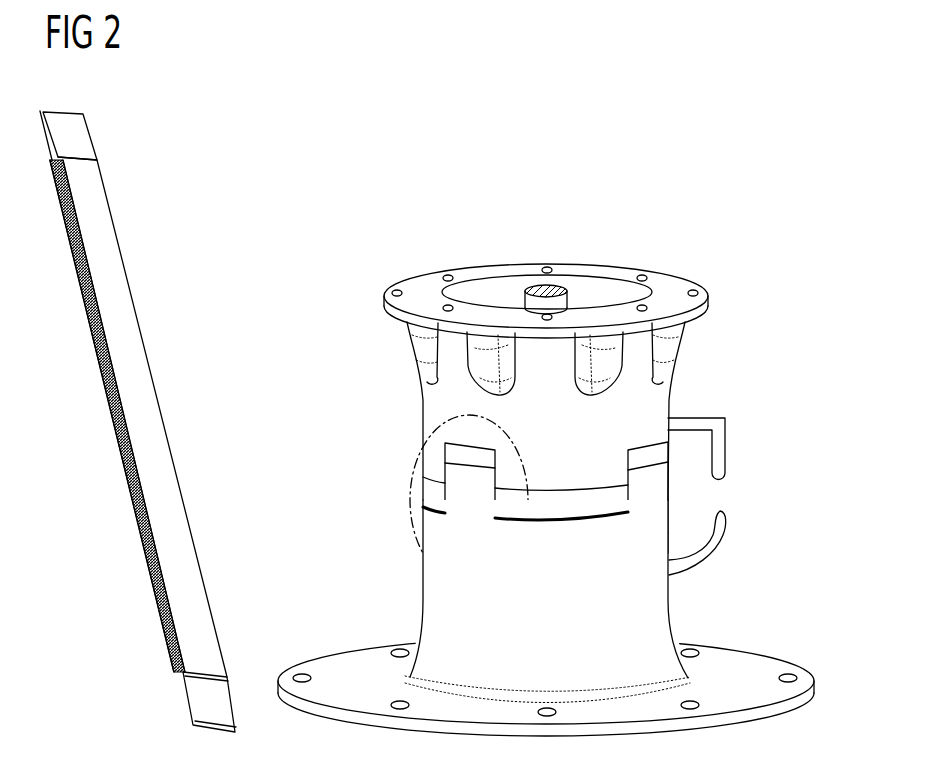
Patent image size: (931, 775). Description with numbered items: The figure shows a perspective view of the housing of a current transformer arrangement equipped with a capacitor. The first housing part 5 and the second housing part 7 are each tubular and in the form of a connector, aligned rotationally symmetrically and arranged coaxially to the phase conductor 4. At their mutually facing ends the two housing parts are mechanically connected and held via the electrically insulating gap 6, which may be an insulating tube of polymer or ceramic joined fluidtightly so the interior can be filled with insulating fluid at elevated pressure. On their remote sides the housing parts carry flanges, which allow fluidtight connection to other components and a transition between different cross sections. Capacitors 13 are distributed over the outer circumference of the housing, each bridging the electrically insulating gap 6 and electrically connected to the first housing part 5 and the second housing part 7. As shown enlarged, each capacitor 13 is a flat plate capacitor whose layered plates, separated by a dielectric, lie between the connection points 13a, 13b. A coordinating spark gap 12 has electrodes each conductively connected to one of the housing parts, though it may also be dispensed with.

The phase conductor 4 is at (538, 290).
The first housing part 5 is at (668, 590).
The electrically insulating gap 6 is at (573, 500).
The second housing part 7 is at (668, 400).
The coordinating spark gap 12 is at (727, 430).
The capacitor 13 is at (413, 478).
The connection point 13a is at (185, 710).
The connection point 13b is at (90, 133).